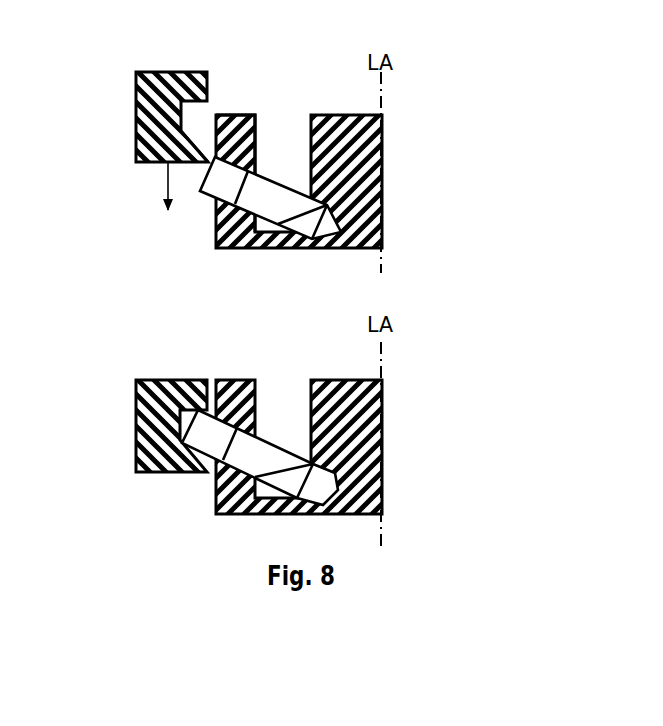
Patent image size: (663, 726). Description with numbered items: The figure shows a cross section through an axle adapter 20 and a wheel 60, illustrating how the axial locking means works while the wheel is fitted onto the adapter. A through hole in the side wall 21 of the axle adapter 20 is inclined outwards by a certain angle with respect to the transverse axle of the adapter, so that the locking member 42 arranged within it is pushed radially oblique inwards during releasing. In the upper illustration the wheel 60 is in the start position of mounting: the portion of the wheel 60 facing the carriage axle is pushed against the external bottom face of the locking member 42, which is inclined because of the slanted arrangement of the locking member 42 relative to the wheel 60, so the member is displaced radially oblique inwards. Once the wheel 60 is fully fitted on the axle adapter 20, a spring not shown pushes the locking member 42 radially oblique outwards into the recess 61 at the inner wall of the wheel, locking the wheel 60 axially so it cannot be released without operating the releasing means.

The axle adapter 20 is at (345, 159).
The side wall 21 is at (257, 138).
The locking member 42 is at (202, 200).
The wheel 60 is at (167, 99).
The recess 61 is at (198, 122).